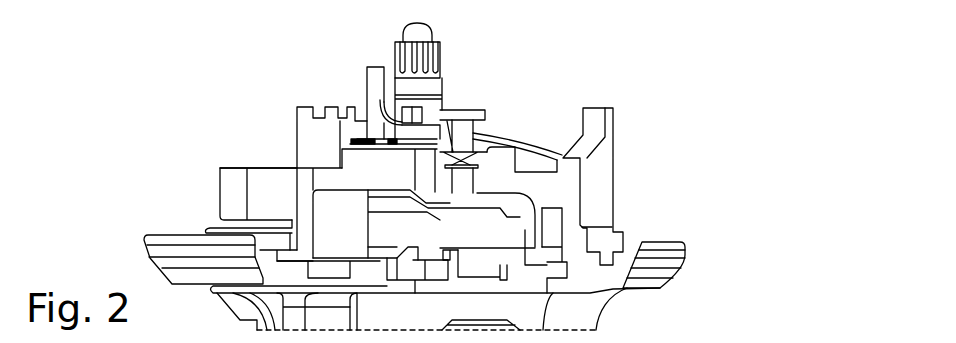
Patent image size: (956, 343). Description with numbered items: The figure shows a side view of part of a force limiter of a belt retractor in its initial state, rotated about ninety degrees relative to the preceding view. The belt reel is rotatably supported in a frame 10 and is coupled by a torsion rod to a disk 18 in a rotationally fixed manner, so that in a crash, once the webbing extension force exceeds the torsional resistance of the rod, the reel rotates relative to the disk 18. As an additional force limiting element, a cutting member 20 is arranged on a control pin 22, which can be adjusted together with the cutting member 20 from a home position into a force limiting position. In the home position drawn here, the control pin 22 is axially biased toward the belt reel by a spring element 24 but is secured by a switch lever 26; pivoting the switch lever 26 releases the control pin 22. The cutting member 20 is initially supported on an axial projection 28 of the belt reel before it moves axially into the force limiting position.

The frame 10 is at (590, 320).
The disk 18 is at (233, 192).
The cutting member 20 is at (390, 220).
The control pin 22 is at (470, 130).
The spring element 24 is at (487, 147).
The switch lever 26 is at (385, 121).
The axial projection 28 is at (388, 273).